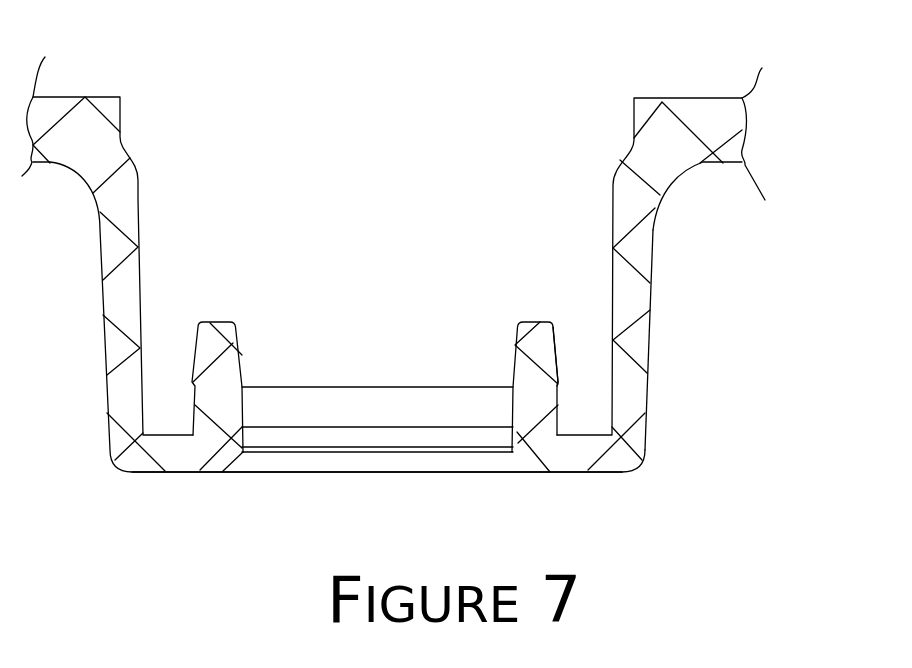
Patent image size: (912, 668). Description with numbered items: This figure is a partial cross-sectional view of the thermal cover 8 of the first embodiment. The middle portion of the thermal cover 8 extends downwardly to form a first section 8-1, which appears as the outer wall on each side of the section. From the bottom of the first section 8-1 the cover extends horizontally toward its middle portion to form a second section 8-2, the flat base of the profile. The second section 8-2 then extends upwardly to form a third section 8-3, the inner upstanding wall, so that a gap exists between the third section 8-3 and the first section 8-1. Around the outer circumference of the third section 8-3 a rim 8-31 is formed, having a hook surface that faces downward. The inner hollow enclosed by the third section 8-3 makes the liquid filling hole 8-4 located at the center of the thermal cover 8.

The thermal cover 8 is at (662, 127).
The first section 8-1 is at (637, 255).
The second section 8-2 is at (587, 453).
The third section 8-3 is at (540, 352).
The rim 8-31 is at (558, 385).
The liquid filling hole 8-4 is at (372, 443).